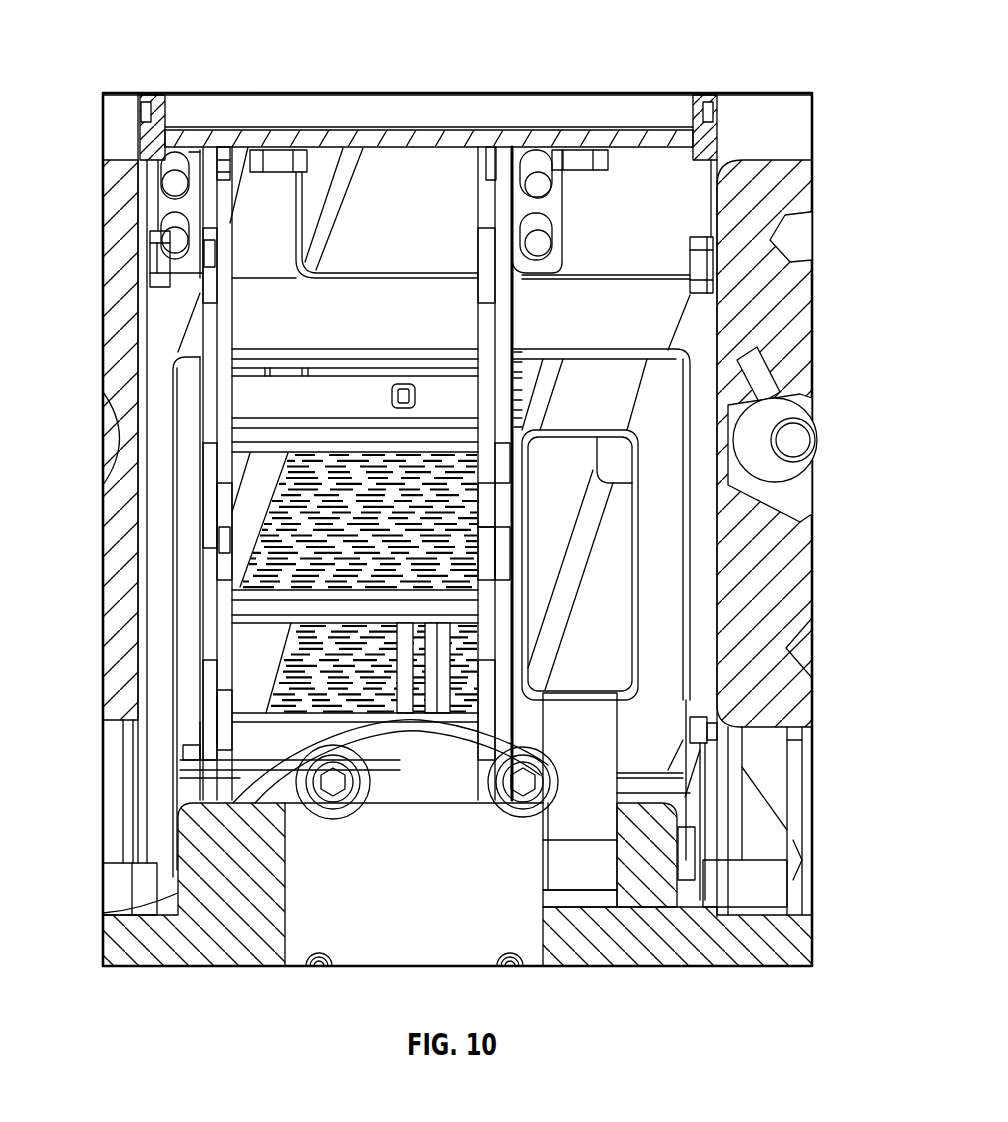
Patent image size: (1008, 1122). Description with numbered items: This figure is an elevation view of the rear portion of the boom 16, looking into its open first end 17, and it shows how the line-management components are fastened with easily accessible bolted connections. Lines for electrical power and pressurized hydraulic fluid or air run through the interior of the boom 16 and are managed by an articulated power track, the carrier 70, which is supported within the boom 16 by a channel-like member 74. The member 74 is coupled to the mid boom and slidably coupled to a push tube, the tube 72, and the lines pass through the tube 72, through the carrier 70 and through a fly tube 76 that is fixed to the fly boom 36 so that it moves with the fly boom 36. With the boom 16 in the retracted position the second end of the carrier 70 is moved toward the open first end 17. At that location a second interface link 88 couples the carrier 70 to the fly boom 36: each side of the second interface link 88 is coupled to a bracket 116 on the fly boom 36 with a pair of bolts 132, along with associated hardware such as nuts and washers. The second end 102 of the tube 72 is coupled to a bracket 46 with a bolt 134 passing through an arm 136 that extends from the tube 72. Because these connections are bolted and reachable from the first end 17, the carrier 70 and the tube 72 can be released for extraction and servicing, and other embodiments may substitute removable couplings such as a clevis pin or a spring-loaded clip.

The first end 17 is at (758, 52).
The fly boom 36 is at (415, 140).
The boom 16 is at (127, 395).
The bracket 116 is at (153, 170).
The bolts 132 is at (150, 239).
The second interface link 88 is at (210, 208).
The member 74 is at (186, 347).
The fly tube 76 is at (374, 258).
The carrier 70 is at (488, 313).
The tube 72 is at (600, 370).
The second end 102 is at (645, 622).
The arm 136 is at (565, 822).
The bracket 46 is at (598, 957).
The bolt 134 is at (700, 880).